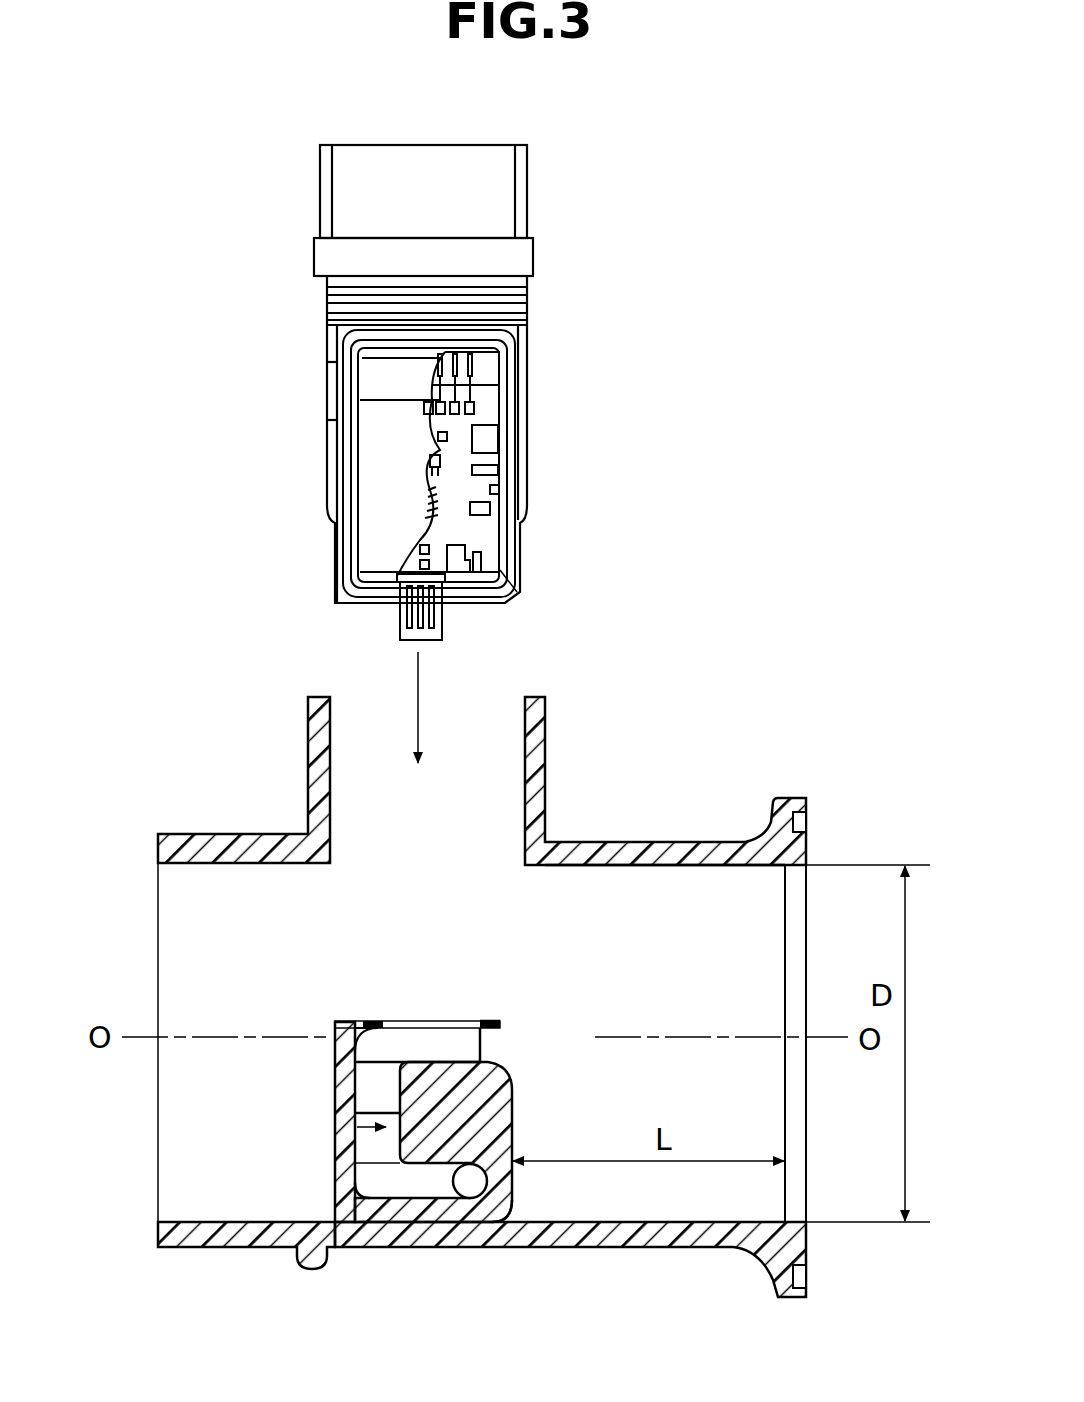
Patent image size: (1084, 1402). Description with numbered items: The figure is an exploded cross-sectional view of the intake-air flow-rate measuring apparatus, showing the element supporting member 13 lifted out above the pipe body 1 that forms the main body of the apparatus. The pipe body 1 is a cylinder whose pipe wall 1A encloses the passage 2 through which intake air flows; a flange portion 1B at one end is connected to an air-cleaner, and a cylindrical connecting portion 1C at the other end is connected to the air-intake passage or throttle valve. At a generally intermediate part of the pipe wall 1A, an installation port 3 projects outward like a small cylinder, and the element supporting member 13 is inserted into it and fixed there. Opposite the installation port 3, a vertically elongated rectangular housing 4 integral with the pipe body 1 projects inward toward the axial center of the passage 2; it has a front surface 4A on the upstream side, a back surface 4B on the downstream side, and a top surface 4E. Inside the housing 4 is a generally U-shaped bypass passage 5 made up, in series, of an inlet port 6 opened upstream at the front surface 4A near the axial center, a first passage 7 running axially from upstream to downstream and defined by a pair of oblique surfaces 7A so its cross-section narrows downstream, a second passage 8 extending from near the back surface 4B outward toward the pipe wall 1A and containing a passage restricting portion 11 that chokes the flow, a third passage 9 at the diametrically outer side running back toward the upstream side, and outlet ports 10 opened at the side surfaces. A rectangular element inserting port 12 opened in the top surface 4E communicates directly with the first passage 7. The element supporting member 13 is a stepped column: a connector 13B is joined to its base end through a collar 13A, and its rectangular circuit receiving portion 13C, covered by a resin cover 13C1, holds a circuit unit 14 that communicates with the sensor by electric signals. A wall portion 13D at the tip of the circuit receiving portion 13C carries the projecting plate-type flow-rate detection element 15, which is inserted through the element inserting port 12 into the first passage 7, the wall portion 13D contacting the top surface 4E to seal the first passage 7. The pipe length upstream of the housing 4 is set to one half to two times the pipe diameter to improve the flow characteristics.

The pipe body 1 is at (680, 840).
The pipe wall 1A is at (680, 1235).
The flange portion 1B is at (775, 1297).
The connecting portion 1C is at (177, 1238).
The passage 2 is at (620, 877).
The installation port 3 is at (307, 733).
The housing 4 is at (505, 1120).
The front surface 4A is at (517, 1173).
The back surface 4B is at (340, 1168).
The top surface 4E is at (479, 1020).
The bypass passage 5 is at (355, 1127).
The inlet port 6 is at (472, 1042).
The first passage 7 is at (375, 1047).
The oblique surfaces 7A is at (487, 1052).
The second passage 8 is at (372, 1148).
The third passage 9 is at (393, 1187).
The outlet ports 10 is at (465, 1190).
The passage restricting portion 11 is at (378, 1105).
The element inserting port 12 is at (400, 1019).
The element supporting member 13 is at (545, 172).
The collar 13A is at (528, 262).
The connector 13B is at (448, 150).
The circuit receiving portion 13C is at (497, 345).
The cover 13C1 is at (377, 428).
The wall portion 13D is at (487, 585).
The circuit unit 14 is at (492, 412).
The plate-type flow-rate detection element 15 is at (398, 617).